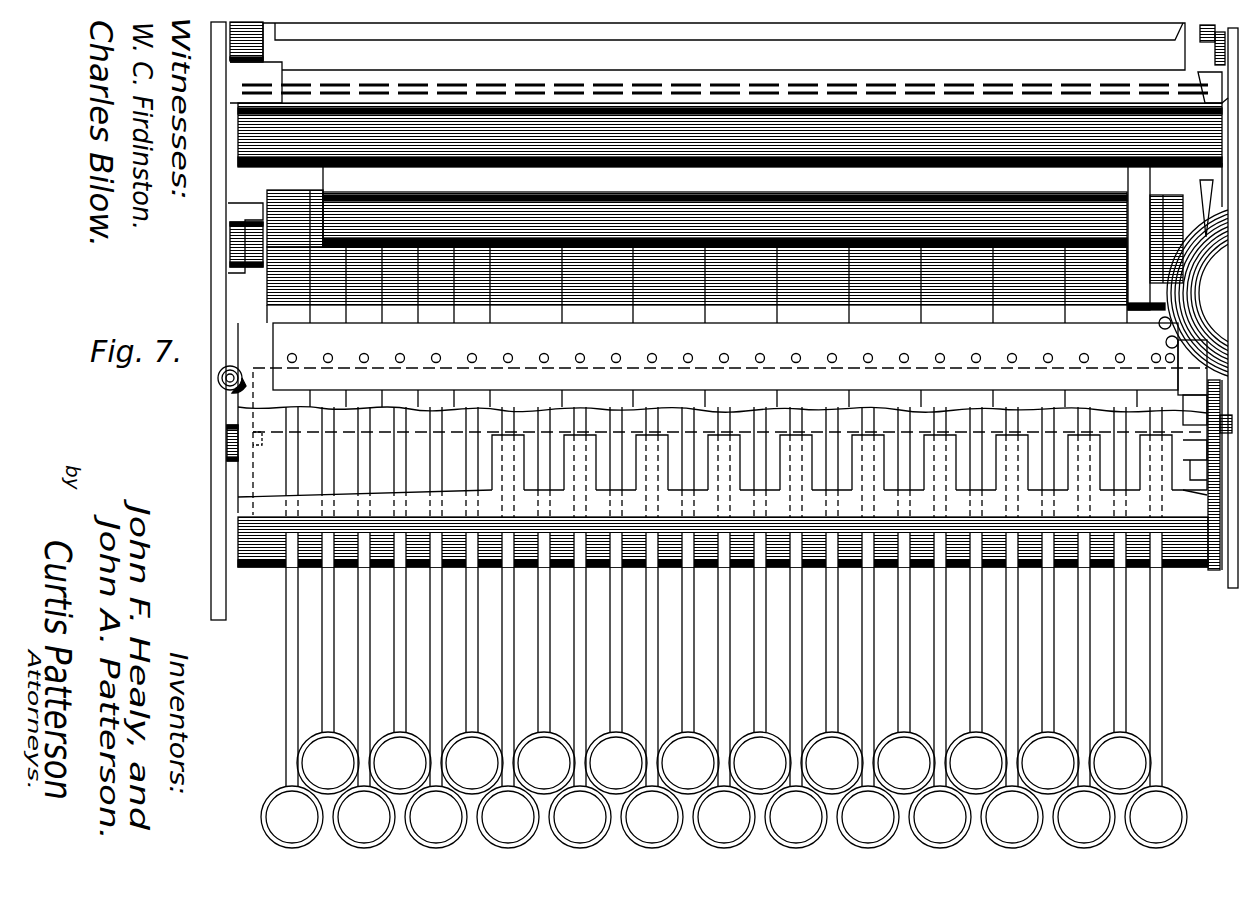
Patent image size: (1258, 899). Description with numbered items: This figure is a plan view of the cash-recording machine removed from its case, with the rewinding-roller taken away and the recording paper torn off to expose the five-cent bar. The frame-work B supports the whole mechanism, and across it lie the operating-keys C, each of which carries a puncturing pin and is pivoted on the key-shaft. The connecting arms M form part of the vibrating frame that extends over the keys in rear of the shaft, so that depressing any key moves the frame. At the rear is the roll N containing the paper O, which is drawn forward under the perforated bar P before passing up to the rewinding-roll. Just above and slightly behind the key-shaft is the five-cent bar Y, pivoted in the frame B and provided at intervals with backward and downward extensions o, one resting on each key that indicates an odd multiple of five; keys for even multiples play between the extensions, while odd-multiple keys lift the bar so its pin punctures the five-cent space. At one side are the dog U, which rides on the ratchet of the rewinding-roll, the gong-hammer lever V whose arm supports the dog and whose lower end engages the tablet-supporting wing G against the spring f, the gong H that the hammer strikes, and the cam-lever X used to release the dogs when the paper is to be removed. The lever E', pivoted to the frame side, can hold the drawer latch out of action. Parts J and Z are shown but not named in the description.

The tablet-supporting wing G is at (722, 62).
The spring f is at (1212, 36).
The gong-hammer lever V is at (1222, 92).
The bell or gong H is at (1204, 287).
The roll containing the paper N is at (250, 222).
The paper O is at (249, 408).
The perforated bar P is at (730, 374).
The lever E' is at (206, 382).
The connecting arms M is at (261, 443).
The backward and downward extensions o is at (832, 462).
The bar Y is at (722, 462).
The frame-work B is at (1225, 530).
The operating-keys C is at (724, 690).
The pin J is at (1232, 425).
The dog U is at (1225, 450).
The cam-lever X is at (1222, 475).
The bar Z is at (1215, 496).